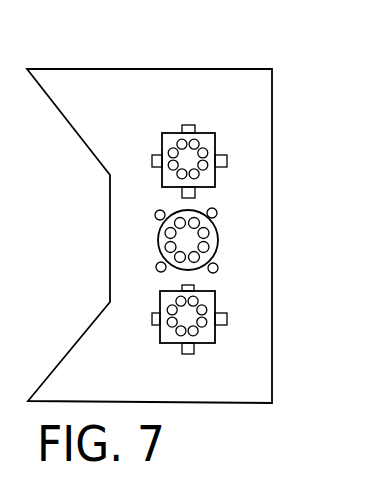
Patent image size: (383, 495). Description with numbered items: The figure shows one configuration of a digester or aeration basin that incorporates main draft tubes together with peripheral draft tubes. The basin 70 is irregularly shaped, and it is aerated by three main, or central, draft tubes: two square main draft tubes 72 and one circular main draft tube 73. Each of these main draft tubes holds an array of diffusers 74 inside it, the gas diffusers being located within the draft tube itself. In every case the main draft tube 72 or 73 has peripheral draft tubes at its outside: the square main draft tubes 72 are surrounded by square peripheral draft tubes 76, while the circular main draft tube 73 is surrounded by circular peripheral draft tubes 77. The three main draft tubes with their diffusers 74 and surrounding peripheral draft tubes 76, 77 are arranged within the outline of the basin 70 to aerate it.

The irregularly shaped basin 70 is at (213, 69).
The main draft tube 72 is at (217, 147).
The main draft tube 73 is at (218, 240).
The diffusers 74 is at (208, 167).
The peripheral draft tubes 76 is at (152, 160).
The peripheral draft tubes 77 is at (218, 268).